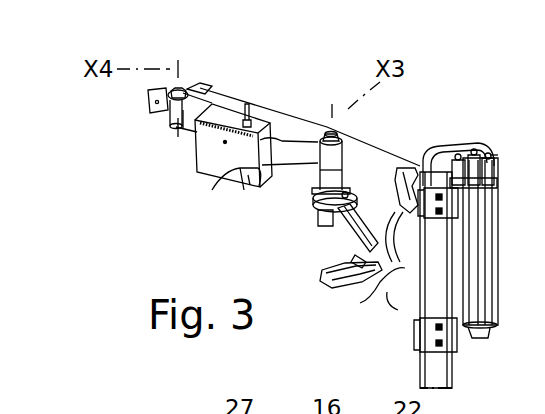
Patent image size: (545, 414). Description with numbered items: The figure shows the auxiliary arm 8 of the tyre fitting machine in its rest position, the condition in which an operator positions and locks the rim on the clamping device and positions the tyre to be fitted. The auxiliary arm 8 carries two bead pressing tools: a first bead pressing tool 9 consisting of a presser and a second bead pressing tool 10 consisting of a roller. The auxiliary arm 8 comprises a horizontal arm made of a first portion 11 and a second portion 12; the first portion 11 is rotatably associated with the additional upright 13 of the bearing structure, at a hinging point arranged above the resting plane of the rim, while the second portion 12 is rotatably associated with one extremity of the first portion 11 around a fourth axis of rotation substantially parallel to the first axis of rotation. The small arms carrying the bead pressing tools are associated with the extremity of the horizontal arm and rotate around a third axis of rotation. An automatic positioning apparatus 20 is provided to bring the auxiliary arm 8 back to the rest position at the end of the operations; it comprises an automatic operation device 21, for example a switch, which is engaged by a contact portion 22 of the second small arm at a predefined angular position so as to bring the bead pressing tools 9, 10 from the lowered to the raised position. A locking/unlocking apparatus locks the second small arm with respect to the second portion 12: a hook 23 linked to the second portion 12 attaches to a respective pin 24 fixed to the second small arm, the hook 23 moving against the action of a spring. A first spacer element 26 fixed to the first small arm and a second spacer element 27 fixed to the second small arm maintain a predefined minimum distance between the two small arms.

The auxiliary arm 8 is at (320, 130).
The first bead pressing tool 9 is at (320, 268).
The second bead pressing tool 10 is at (380, 282).
The first portion of the horizontal arm 11 is at (280, 123).
The second portion of the horizontal arm 12 is at (170, 117).
The additional upright 13 is at (442, 373).
The automatic positioning apparatus 20 is at (207, 148).
The automatic operation device 21 is at (236, 180).
The contact portion 22 is at (365, 172).
The hook 23 is at (340, 203).
The pin 24 is at (317, 192).
The first spacer element 26 is at (370, 183).
The second spacer element 27 is at (400, 233).